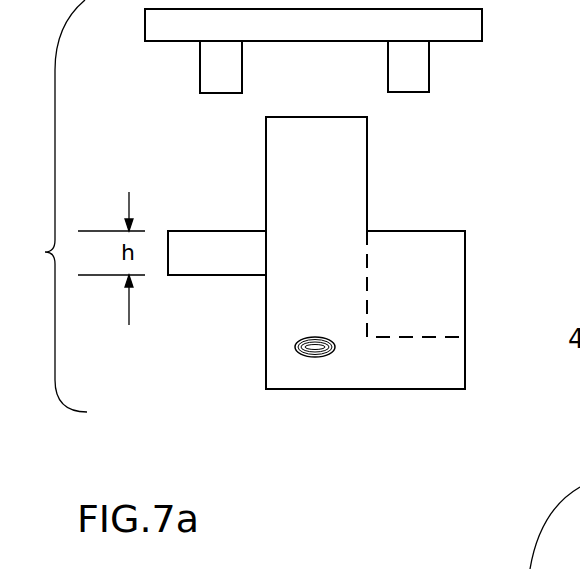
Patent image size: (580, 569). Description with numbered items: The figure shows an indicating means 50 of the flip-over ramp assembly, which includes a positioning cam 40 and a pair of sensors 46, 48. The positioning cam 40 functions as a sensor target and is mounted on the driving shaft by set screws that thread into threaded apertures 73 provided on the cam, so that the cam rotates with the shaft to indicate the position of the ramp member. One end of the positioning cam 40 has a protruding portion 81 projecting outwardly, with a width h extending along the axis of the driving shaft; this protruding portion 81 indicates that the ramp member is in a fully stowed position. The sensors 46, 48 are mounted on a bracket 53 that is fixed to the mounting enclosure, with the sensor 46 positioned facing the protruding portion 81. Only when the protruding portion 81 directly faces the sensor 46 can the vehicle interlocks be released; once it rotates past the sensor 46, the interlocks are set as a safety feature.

The positioning cam 40 is at (370, 478).
The sensor 46 is at (207, 65).
The sensor 48 is at (418, 63).
The indicating means 50 is at (50, 282).
The bracket 53 is at (447, 15).
The threaded aperture 73 is at (315, 350).
The protruding portion 81 is at (202, 237).